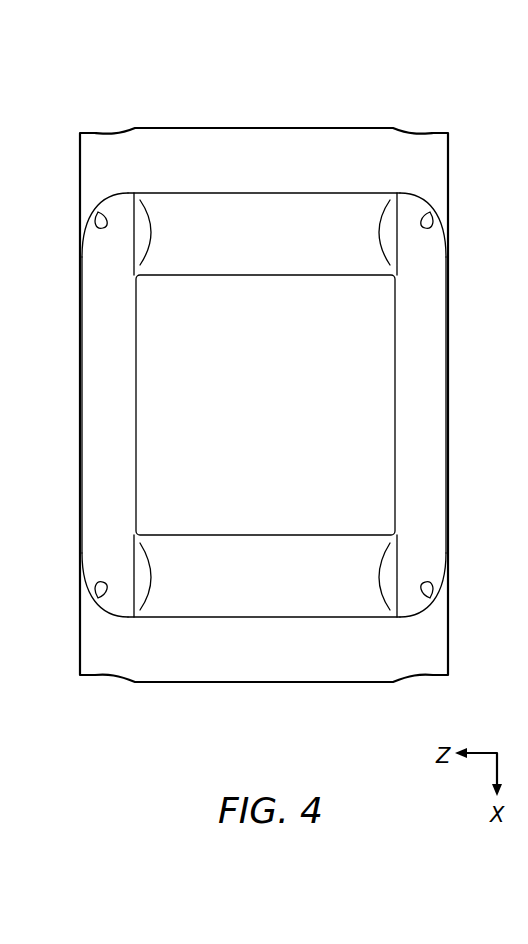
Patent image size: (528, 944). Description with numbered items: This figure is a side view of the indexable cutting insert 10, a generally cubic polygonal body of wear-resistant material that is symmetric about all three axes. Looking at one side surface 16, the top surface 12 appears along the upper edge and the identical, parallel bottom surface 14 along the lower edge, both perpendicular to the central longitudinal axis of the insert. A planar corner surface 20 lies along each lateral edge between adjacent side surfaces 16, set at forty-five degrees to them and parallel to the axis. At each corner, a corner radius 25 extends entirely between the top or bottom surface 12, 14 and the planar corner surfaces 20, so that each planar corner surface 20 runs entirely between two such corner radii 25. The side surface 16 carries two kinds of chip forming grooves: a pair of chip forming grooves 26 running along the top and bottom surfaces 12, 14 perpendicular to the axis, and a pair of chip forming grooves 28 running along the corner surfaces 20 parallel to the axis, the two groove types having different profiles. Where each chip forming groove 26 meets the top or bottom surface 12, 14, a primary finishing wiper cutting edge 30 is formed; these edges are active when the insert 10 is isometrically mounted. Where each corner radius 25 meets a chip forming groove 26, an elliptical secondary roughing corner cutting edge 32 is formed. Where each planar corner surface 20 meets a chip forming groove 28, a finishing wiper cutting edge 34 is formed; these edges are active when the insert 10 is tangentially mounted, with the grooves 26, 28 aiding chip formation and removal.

The indexable cutting insert 10 is at (87, 81).
The top surface 12 is at (455, 333).
The bottom surface 14 is at (73, 333).
The side surface 16 is at (248, 128).
The planar corner surface 20 is at (283, 148).
The corner radius 25 is at (98, 163).
The chip forming groove 26 is at (103, 286).
The chip forming groove 28 is at (305, 235).
The primary finishing wiper cutting edge 30 is at (80, 470).
The secondary roughing corner cutting edge 32 is at (108, 133).
The finishing wiper cutting edge 34 is at (187, 128).